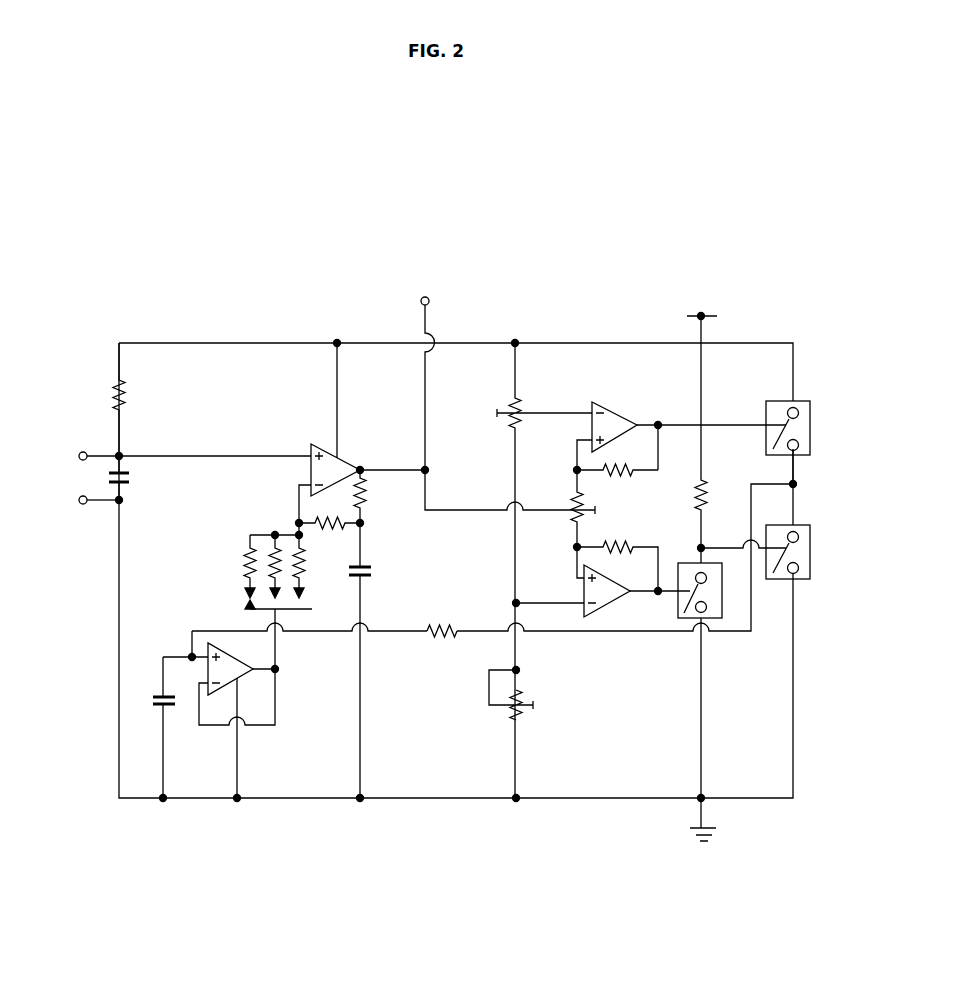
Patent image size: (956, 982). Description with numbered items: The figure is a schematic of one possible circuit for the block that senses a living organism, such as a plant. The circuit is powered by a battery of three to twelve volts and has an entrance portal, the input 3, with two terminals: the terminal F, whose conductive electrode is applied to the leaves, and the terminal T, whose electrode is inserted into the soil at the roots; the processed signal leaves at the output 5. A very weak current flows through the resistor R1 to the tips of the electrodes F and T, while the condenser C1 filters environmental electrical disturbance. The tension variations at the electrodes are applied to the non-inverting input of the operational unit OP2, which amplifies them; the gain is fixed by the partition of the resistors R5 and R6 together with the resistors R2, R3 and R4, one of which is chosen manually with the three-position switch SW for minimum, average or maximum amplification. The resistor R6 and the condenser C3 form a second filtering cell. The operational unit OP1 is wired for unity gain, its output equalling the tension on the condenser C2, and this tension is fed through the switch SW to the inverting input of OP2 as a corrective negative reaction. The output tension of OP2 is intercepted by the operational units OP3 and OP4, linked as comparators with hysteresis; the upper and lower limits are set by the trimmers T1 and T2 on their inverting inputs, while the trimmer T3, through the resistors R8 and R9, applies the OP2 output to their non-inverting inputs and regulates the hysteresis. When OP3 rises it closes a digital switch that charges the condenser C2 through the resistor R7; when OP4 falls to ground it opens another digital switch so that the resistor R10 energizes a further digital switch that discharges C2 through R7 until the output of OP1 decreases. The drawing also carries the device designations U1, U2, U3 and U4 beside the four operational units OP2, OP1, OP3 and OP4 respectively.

The resistor R1 is at (133, 399).
The condenser C1 is at (133, 478).
The condenser C2 is at (149, 727).
The condenser C3 is at (375, 660).
The resistor R2 is at (238, 566).
The resistor R3 is at (276, 540).
The resistor R4 is at (307, 566).
The resistor R5 is at (328, 537).
The resistor R6 is at (373, 498).
The resistor R7 is at (442, 619).
The resistor R8 is at (616, 482).
The resistor R9 is at (617, 554).
The resistor R10 is at (728, 434).
The trimmer T1 is at (530, 570).
The trimmer T2 is at (528, 694).
The trimmer T3 is at (564, 510).
The operational unit OP1 is at (208, 654).
The operational unit OP2 is at (320, 419).
The operational unit OP3 is at (604, 415).
The operational unit OP4 is at (615, 594).
The op-amp output node U1 is at (239, 719).
The op-amp output node U2 is at (364, 481).
The op-amp output node U3 is at (681, 433).
The op-amp output node U4 is at (603, 575).
The three-position switch SW is at (294, 634).
The terminal F is at (185, 456).
The terminal T is at (90, 501).
The input 3 is at (55, 477).
The output 5 is at (496, 403).